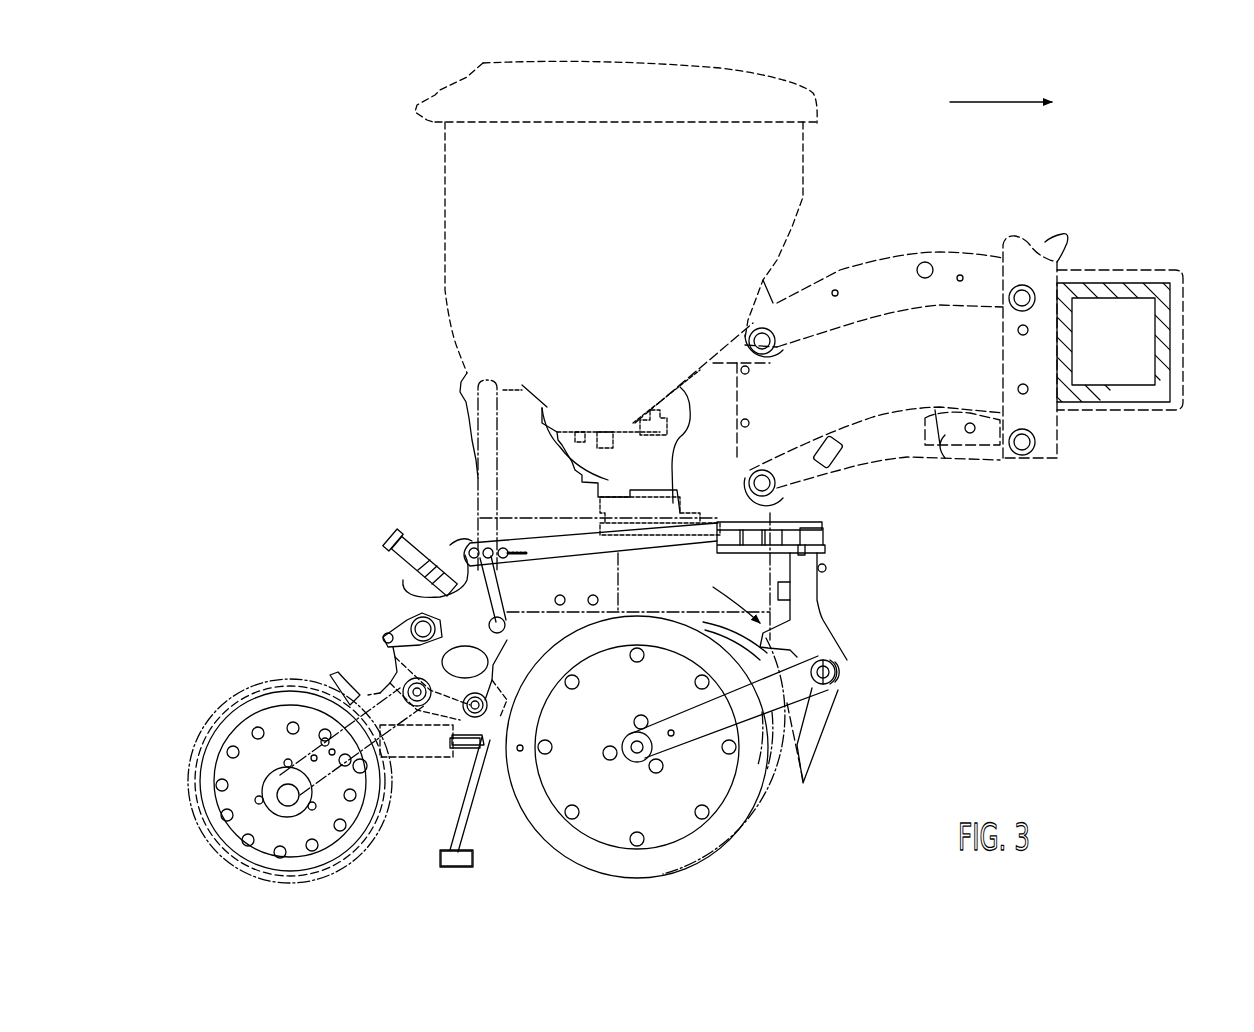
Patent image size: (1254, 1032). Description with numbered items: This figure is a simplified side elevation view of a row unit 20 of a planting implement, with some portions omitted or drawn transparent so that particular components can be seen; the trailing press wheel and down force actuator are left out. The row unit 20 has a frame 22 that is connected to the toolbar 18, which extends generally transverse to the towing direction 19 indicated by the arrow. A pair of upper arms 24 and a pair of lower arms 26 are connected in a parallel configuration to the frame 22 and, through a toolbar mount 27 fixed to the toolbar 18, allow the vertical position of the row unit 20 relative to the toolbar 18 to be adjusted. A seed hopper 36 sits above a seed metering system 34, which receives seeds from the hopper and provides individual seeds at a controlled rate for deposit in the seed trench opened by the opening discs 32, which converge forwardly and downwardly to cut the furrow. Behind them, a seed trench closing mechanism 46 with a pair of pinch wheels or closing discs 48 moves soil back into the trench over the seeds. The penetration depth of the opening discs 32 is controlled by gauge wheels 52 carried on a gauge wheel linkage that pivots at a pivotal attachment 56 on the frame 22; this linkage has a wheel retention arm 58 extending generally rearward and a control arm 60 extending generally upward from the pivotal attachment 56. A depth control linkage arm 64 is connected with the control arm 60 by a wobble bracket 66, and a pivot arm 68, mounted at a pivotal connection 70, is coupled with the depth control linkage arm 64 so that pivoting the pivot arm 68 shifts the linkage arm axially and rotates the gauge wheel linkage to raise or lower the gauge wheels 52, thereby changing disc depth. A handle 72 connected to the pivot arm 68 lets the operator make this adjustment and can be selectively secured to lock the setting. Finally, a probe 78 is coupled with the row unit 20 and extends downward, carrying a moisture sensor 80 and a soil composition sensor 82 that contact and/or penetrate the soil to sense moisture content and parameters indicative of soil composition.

The toolbar 18 is at (1175, 327).
The towing direction 19 is at (1010, 100).
The row unit 20 is at (420, 40).
The frame 22 is at (437, 541).
The upper arms 24 is at (930, 250).
The lower arms 26 is at (900, 470).
The toolbar mount 27 is at (1045, 262).
The opening discs 32 is at (768, 812).
The seed metering system 34 is at (535, 453).
The seed hopper 36 is at (460, 225).
The seed trench closing mechanism 46 is at (157, 797).
The closing discs 48 is at (233, 713).
The gauge wheels 52 is at (562, 837).
The pivotal attachment 56 is at (835, 672).
The wheel retention arm 58 is at (695, 720).
The control arm 60 is at (803, 600).
The depth control linkage arm 64 is at (540, 535).
The wobble bracket 66 is at (820, 533).
The pivot arm 68 is at (410, 612).
The pivotal connection 70 is at (383, 643).
The handle 72 is at (383, 540).
The probe 78 is at (463, 817).
The moisture sensor 80 is at (453, 868).
The soil composition sensor 82 is at (456, 858).